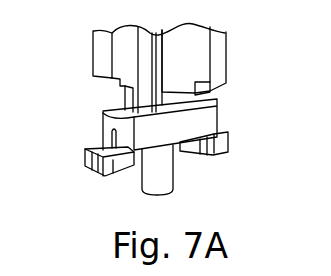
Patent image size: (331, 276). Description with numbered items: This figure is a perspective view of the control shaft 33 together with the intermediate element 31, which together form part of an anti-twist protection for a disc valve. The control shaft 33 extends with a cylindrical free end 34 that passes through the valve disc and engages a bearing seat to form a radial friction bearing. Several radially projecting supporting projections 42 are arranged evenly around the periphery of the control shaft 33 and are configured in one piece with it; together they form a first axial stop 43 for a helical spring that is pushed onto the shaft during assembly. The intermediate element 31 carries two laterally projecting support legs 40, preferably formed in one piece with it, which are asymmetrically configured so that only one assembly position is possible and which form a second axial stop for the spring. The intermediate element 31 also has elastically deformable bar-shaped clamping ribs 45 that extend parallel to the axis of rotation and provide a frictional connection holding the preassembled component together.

The intermediate element 31 is at (193, 122).
The control shaft 33 is at (227, 42).
The free end 34 is at (180, 166).
The support legs 40 is at (87, 155).
The supporting projections 42 is at (110, 53).
The first axial stop 43 is at (97, 82).
The clamping ribs 45 is at (108, 143).